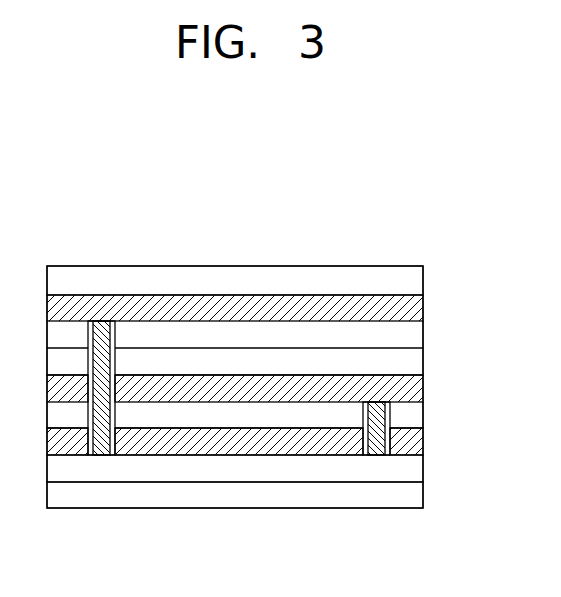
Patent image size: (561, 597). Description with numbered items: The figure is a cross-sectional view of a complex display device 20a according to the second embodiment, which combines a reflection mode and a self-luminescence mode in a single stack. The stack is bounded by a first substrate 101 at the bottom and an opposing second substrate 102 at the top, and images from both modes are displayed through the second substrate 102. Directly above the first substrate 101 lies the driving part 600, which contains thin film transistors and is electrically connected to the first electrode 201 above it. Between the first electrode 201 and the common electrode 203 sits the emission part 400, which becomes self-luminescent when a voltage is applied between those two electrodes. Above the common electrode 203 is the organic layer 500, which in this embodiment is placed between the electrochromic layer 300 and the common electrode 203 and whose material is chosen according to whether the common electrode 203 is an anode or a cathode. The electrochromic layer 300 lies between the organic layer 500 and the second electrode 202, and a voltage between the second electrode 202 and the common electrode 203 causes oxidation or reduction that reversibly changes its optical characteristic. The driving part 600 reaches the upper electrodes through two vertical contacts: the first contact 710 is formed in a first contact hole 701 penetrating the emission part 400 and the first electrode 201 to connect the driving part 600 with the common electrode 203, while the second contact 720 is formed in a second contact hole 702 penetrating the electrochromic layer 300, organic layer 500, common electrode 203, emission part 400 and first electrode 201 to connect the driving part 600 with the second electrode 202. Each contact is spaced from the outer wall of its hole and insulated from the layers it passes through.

The complex display device 20a is at (401, 208).
The second substrate 102 is at (412, 281).
The second electrode 202 is at (412, 308).
The electrochromic layer 300 is at (412, 335).
The organic layer 500 is at (412, 361).
The common electrode 203 is at (412, 389).
The emission part 400 is at (412, 415).
The first electrode 201 is at (412, 441).
The driving part 600 is at (412, 468).
The first substrate 101 is at (412, 495).
The second contact 720 is at (100, 455).
The second contact hole 702 is at (112, 455).
The first contact 710 is at (372, 455).
The first contact hole 701 is at (387, 455).